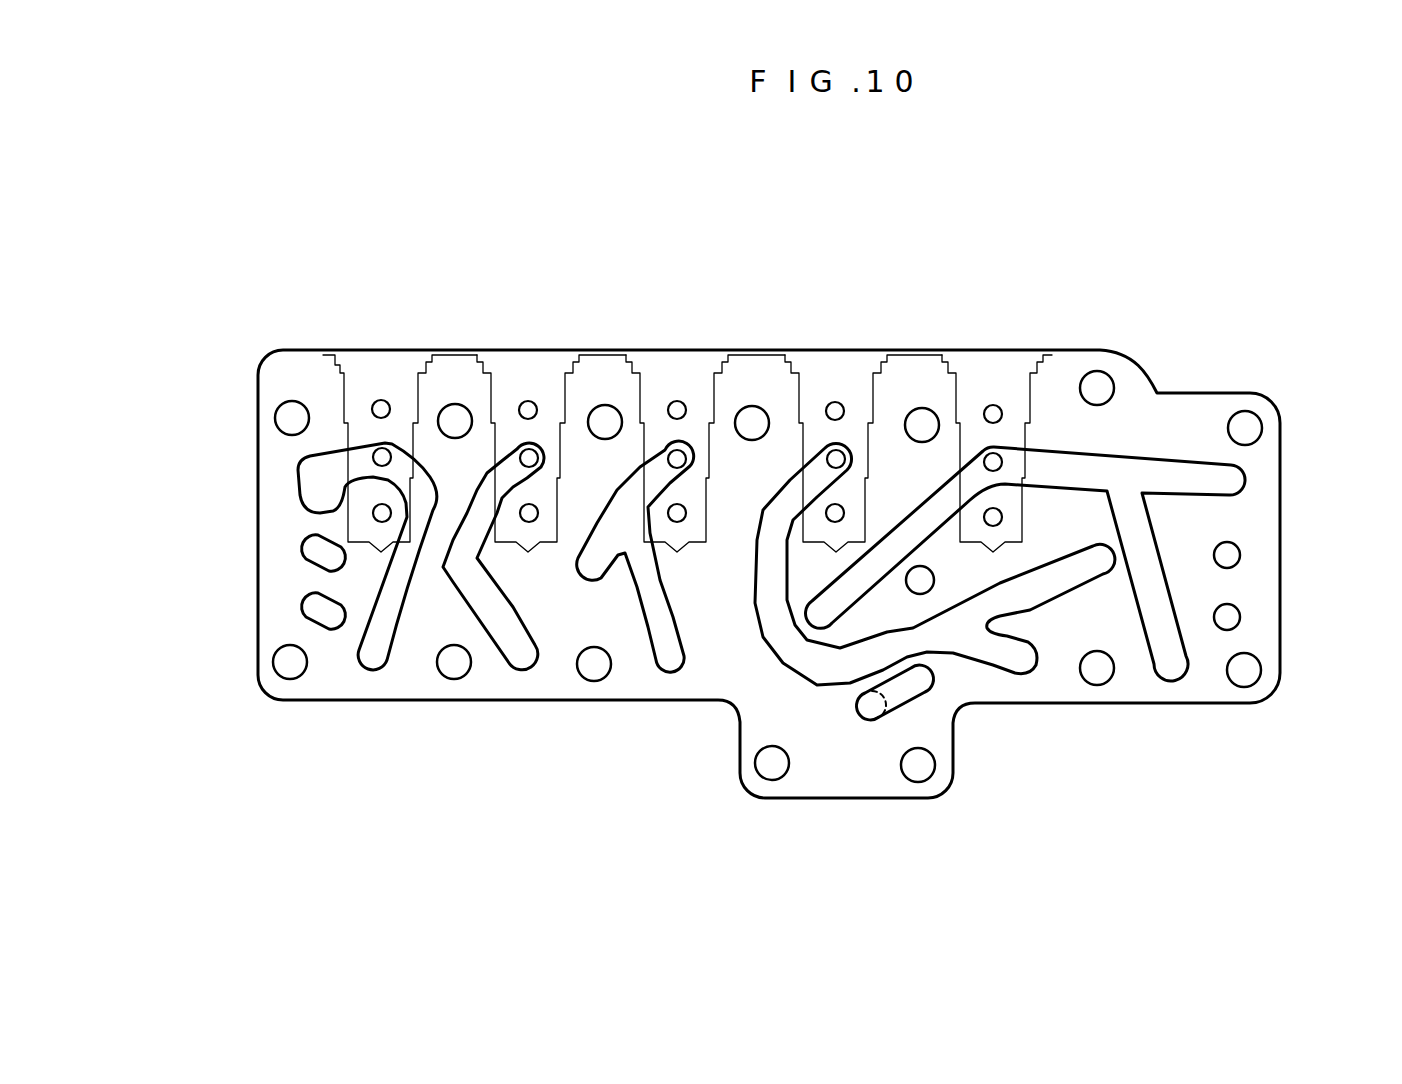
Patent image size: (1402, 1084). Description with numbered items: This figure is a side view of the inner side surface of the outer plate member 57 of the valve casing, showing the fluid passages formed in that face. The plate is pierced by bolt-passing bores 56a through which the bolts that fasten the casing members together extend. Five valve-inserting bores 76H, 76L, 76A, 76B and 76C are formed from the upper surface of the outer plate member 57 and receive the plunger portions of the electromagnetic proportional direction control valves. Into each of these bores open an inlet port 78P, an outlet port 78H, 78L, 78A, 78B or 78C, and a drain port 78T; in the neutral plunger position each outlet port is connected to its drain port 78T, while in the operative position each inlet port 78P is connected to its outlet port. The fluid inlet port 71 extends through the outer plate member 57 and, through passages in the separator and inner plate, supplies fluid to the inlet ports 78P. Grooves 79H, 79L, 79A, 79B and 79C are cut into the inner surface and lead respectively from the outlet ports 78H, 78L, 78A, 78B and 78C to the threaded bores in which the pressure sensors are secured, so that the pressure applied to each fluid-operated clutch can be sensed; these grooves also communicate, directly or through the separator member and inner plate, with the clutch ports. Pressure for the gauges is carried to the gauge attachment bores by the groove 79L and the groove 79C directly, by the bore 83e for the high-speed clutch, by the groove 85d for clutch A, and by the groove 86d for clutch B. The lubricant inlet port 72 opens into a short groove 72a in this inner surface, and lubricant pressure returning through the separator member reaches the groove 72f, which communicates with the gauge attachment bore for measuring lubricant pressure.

The outer plate member 57 is at (1198, 387).
The bolt-passing bores 56a is at (285, 412).
The valve-inserting bore 76C is at (350, 402).
The valve-inserting bore 76B is at (557, 400).
The valve-inserting bore 76A is at (702, 403).
The valve-inserting bore 76H is at (865, 407).
The valve-inserting bore 76L is at (1030, 412).
The inlet ports 78P is at (380, 400).
The drain ports 78T is at (380, 512).
The outlet port 78C is at (377, 457).
The outlet port 78B is at (542, 459).
The outlet port 78A is at (692, 461).
The outlet port 78H is at (851, 460).
The outlet port 78L is at (1000, 450).
The groove 79C is at (427, 500).
The groove 79B is at (455, 567).
The groove 79A is at (650, 585).
The groove 79H is at (782, 658).
The groove 79L is at (1115, 462).
The groove 86d is at (310, 557).
The groove 85d is at (310, 615).
The fluid inlet port 71 is at (922, 580).
The bore 83e is at (1240, 556).
The groove 72f is at (1240, 617).
The lubricant inlet port 72 is at (871, 717).
The short groove 72a is at (925, 690).